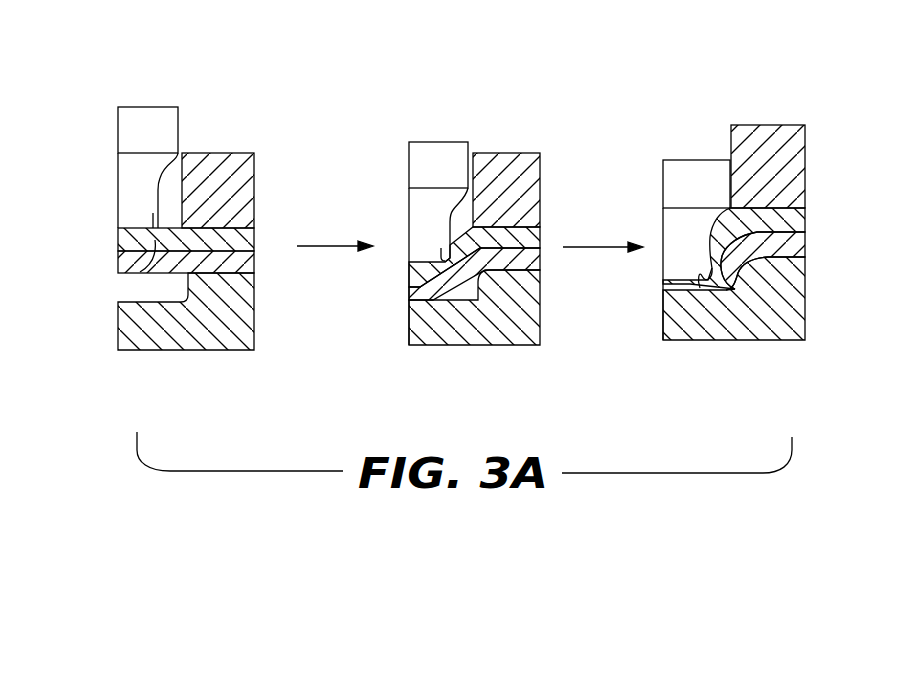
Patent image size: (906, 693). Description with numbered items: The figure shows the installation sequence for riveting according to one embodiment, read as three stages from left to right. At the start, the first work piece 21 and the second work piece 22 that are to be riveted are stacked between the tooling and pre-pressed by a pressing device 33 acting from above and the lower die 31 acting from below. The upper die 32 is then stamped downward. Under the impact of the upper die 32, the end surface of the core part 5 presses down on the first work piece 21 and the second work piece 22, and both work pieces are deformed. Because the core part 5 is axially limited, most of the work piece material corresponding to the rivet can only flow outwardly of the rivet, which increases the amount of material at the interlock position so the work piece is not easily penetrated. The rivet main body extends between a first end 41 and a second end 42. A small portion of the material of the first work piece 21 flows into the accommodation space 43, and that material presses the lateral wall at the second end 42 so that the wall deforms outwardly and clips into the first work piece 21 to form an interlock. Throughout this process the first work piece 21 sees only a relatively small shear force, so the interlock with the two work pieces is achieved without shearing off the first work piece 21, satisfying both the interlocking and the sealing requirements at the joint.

The core part 5 is at (127, 212).
The first work piece 21 is at (253, 240).
The second work piece 22 is at (253, 263).
The lower die 31 is at (206, 328).
The upper die 32 is at (142, 118).
The pressing device 33 is at (222, 163).
The first end 41 is at (128, 180).
The second end 42 is at (140, 272).
The accommodation space 43 is at (153, 221).